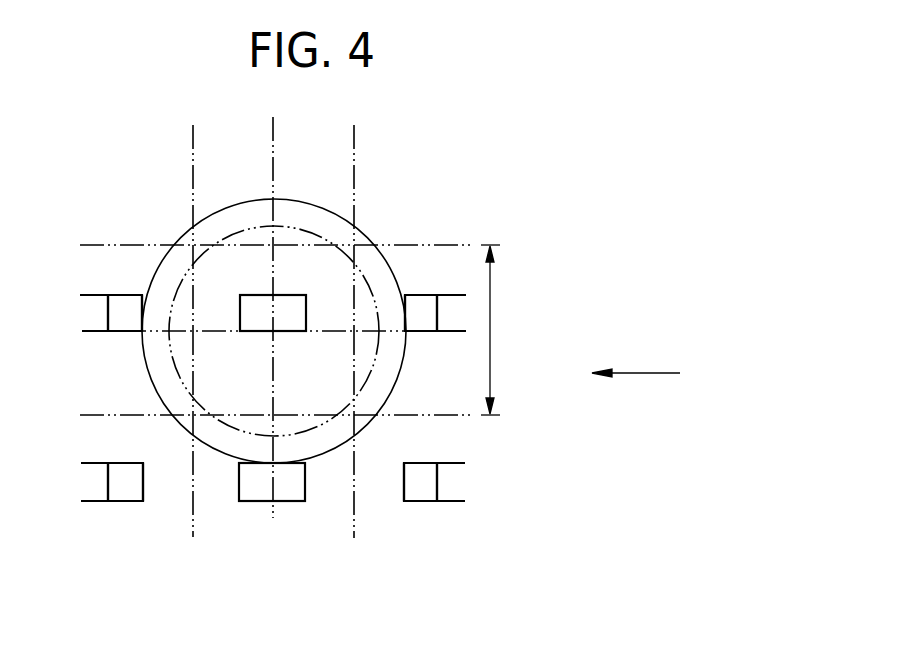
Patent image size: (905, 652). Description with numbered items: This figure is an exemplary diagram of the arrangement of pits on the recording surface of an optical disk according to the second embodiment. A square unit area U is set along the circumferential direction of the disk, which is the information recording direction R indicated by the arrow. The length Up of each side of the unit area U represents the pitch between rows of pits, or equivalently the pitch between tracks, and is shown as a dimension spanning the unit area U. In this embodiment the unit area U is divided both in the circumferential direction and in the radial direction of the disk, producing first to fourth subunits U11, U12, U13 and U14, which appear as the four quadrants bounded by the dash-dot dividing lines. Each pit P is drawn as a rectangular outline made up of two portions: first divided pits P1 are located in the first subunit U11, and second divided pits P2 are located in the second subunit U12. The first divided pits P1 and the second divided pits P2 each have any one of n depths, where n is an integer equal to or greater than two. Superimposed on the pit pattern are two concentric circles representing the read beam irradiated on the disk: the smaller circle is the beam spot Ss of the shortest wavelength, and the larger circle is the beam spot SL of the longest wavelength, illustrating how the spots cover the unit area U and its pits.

The pit P is at (118, 295).
The first divided pits P1 is at (130, 326).
The second divided pits P2 is at (97, 326).
The unit area U is at (276, 317).
The first subunit U11 is at (323, 258).
The second subunit U12 is at (219, 259).
The third subunit U13 is at (191, 370).
The fourth subunit U14 is at (320, 403).
The length of each side of the unit area Up is at (497, 330).
The beam spot of the longest wavelength SL is at (325, 208).
The beam spot of the shortest wavelength Ss is at (228, 200).
The information recording direction R is at (636, 360).